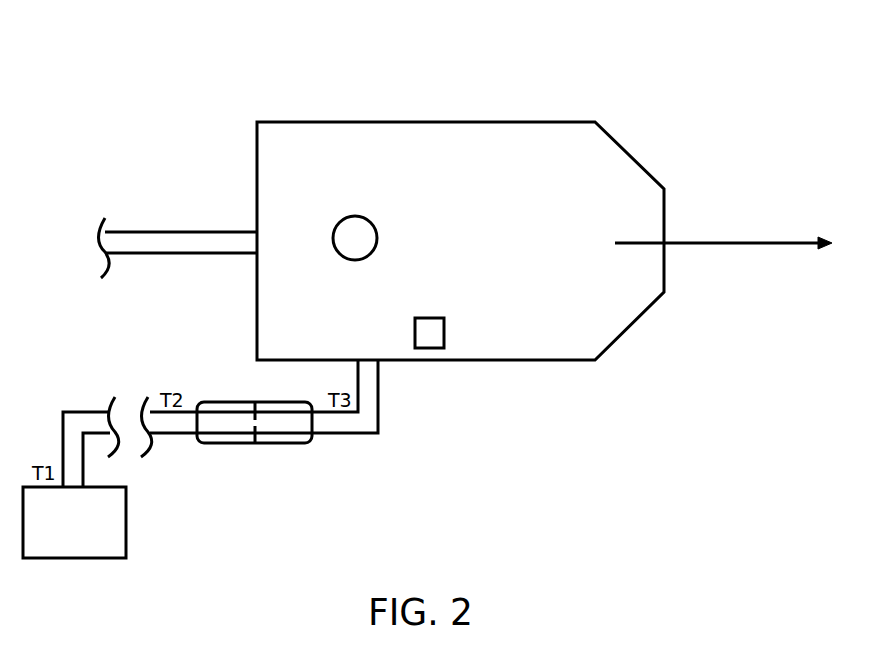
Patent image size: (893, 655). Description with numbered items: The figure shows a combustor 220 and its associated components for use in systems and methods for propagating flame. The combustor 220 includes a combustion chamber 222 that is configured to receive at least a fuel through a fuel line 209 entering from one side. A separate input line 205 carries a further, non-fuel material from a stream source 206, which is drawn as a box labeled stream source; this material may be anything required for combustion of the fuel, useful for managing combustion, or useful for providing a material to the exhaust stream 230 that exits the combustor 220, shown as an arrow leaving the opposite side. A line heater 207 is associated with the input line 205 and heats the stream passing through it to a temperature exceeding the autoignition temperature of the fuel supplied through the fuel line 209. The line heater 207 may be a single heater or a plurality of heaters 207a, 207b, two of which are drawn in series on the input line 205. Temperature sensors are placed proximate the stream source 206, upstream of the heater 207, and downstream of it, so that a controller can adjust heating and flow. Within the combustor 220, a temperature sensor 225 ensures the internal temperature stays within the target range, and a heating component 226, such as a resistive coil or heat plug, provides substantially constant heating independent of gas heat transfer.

The combustor 220 is at (548, 122).
The combustion chamber 222 is at (425, 160).
The fuel line 209 is at (128, 232).
The heating component 226 is at (353, 260).
The temperature sensor 225 is at (444, 333).
The exhaust stream 230 is at (723, 234).
The input line 205 is at (380, 380).
The line heater 207 is at (247, 382).
The heater 207a is at (218, 443).
The heater 207b is at (293, 443).
The stream source 206 is at (126, 542).